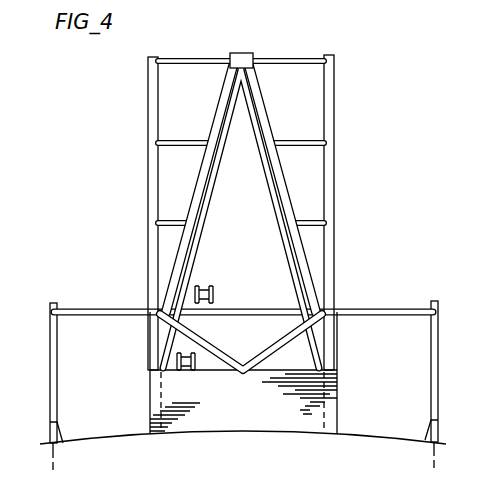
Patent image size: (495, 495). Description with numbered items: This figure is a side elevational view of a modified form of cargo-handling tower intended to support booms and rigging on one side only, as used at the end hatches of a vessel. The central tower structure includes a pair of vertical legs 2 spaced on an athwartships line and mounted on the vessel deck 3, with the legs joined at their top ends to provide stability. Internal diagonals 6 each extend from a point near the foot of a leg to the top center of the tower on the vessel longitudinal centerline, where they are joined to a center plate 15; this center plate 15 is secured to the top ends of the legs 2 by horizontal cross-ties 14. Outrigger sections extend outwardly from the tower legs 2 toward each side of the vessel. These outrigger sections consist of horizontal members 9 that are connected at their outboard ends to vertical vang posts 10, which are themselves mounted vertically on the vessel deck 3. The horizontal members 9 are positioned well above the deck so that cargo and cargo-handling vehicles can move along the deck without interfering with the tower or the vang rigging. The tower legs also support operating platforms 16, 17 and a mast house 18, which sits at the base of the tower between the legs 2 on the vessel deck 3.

The vertical legs 2 is at (148, 106).
The vessel deck 3 is at (365, 433).
The internal diagonals 6 is at (203, 192).
The horizontal members 9 is at (96, 309).
The vertical vang posts 10 is at (57, 372).
The horizontal cross-ties 14 is at (200, 60).
The center plate 15 is at (243, 56).
The operating platform 16 is at (249, 307).
The operating platform 17 is at (310, 357).
The mast house 18 is at (250, 409).